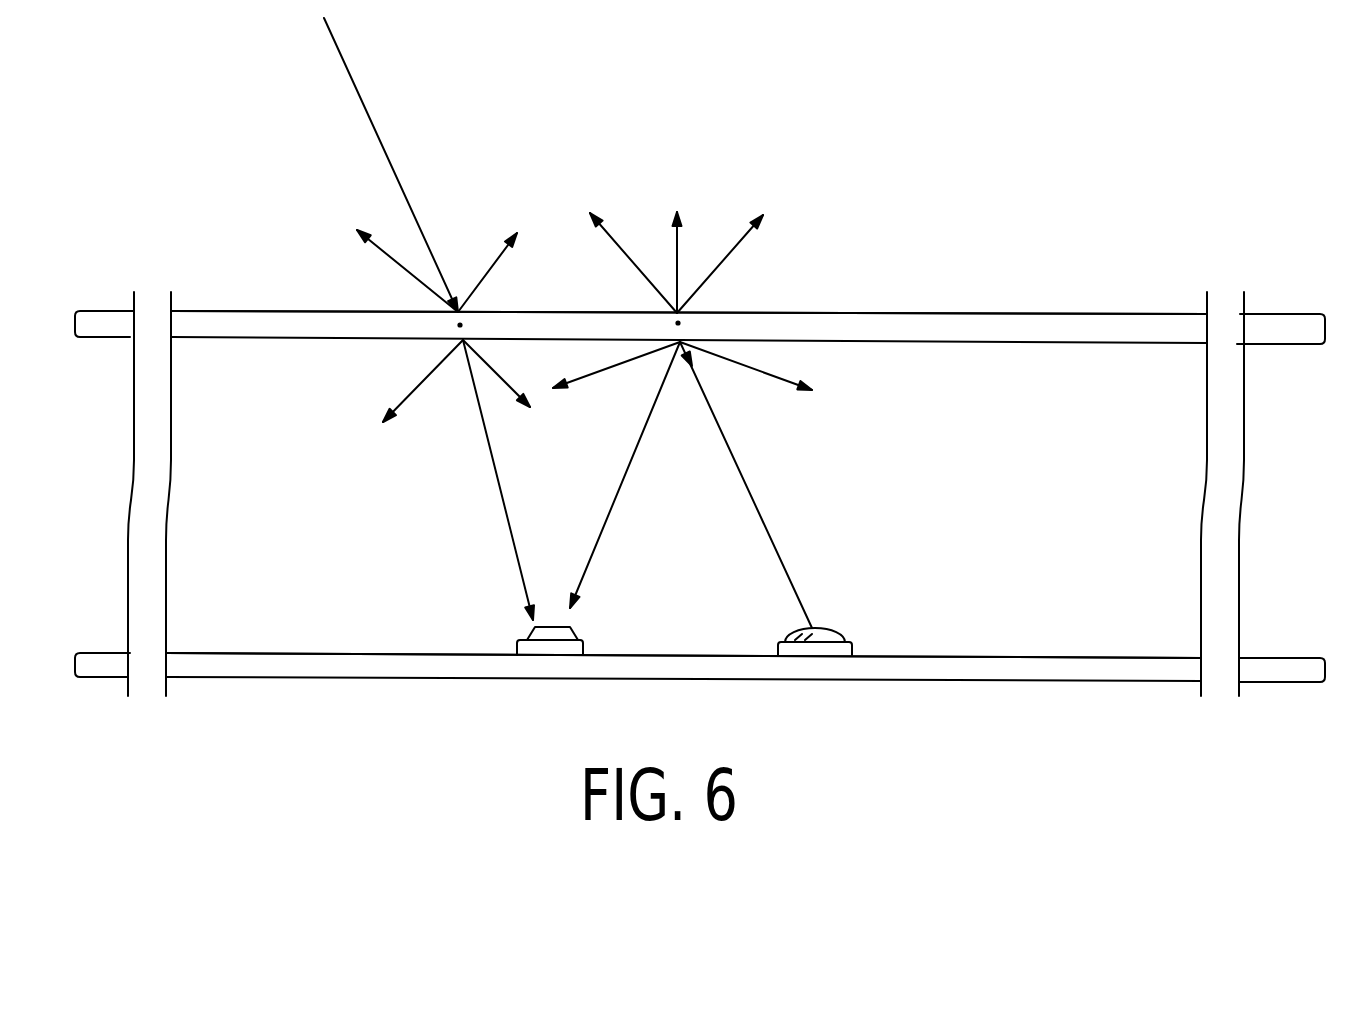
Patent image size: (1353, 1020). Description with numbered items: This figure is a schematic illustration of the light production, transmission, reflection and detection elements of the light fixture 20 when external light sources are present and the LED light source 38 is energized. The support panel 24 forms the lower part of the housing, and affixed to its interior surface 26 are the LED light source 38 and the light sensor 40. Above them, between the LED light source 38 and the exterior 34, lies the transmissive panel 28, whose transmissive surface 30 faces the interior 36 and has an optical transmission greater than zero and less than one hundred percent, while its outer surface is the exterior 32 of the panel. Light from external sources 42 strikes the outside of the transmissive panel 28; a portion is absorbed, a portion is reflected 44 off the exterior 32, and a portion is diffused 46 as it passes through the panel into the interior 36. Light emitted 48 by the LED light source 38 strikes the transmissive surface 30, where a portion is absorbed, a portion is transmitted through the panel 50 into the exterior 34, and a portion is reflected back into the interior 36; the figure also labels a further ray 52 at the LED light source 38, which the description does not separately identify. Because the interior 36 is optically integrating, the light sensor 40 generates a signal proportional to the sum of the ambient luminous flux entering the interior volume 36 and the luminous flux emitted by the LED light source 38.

The light fixture 20 is at (220, 270).
The support panel 24 is at (690, 682).
The interior surface 26 is at (1058, 655).
The transmissive panel 28 is at (1113, 317).
The transmissive surface 30 is at (1052, 343).
The exterior of the panel 32 is at (935, 315).
The exterior 34 is at (858, 252).
The interior 36 is at (308, 431).
The LED light source 38 is at (830, 634).
The light sensor 40 is at (530, 615).
The light from external sources 42 is at (388, 160).
The reflected light 44 is at (412, 278).
The diffused light 46 is at (500, 480).
The light emitted by the LED light source 48 is at (748, 480).
The light transmitted through the panel 50 is at (615, 242).
The emitted light ray 52 is at (622, 488).